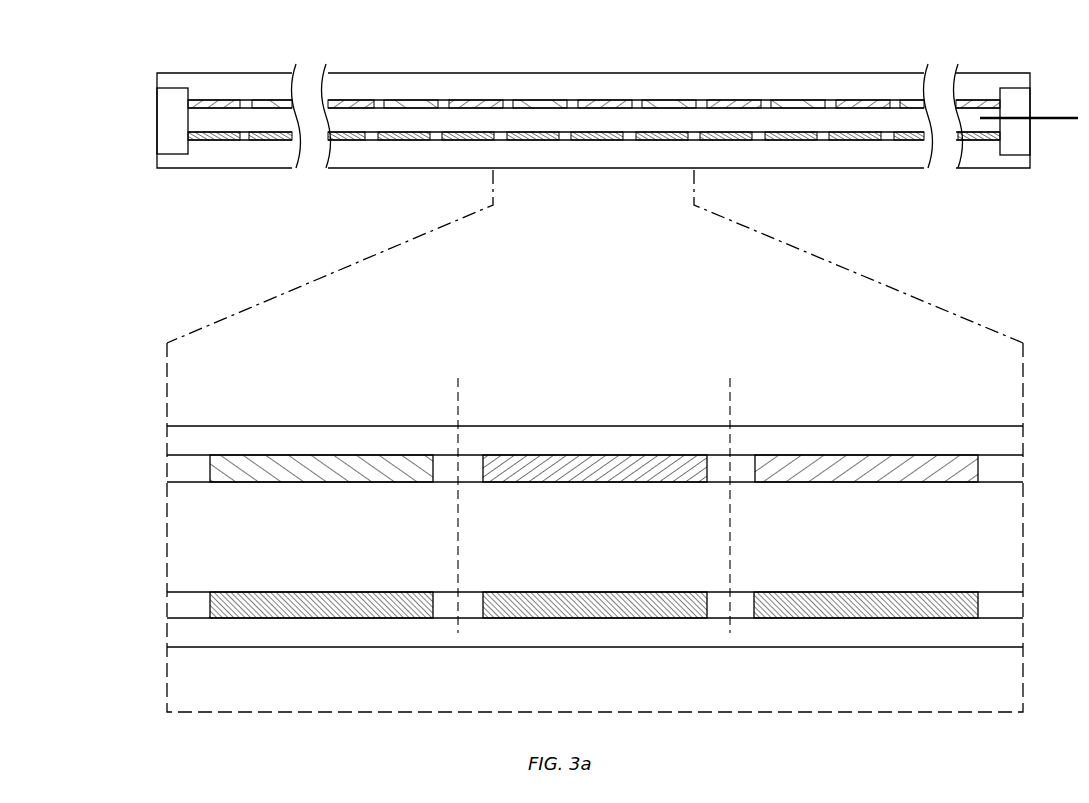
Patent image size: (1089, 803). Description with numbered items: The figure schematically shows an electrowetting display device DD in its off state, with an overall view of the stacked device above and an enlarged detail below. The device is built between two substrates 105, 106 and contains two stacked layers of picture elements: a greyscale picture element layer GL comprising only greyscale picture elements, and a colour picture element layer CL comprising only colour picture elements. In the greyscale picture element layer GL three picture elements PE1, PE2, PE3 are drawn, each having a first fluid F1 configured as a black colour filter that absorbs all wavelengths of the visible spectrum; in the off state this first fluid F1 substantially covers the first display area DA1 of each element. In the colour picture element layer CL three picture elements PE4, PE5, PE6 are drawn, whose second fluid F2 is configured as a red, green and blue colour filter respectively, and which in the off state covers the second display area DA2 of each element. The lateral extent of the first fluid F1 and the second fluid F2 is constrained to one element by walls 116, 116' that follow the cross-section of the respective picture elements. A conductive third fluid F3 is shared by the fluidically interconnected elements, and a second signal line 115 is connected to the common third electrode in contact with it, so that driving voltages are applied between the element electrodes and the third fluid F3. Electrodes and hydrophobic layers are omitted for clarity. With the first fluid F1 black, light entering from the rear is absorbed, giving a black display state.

The display device DD is at (1017, 48).
The first substrate 105 is at (370, 168).
The second substrate 106 is at (370, 80).
The second signal line 115 is at (1050, 115).
The wall 116 is at (595, 580).
The wall 116' is at (595, 493).
The first fluid F1 is at (272, 600).
The second fluid F2 is at (372, 477).
The third fluid F3 is at (167, 535).
The first display area DA1 is at (320, 618).
The second display area DA2 is at (320, 455).
The picture element PE1 is at (238, 660).
The picture element PE2 is at (510, 660).
The picture element PE3 is at (783, 660).
The picture element PE4 is at (237, 444).
The picture element PE5 is at (509, 444).
The picture element PE6 is at (782, 444).
The colour picture element layer CL is at (1030, 426).
The greyscale picture element layer GL is at (1030, 592).